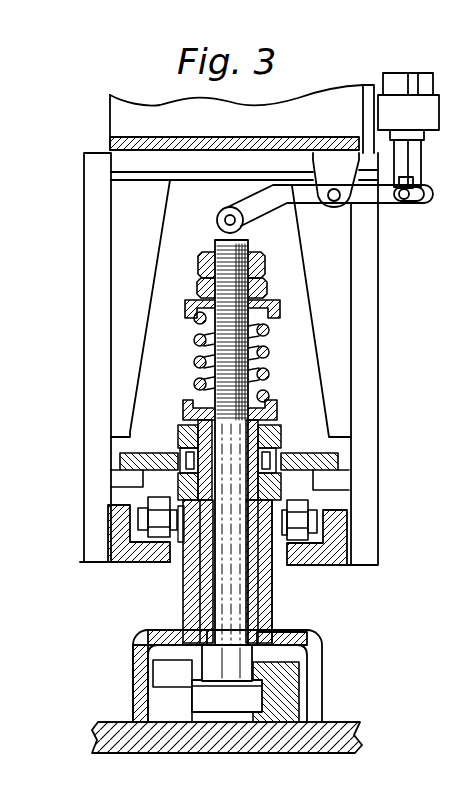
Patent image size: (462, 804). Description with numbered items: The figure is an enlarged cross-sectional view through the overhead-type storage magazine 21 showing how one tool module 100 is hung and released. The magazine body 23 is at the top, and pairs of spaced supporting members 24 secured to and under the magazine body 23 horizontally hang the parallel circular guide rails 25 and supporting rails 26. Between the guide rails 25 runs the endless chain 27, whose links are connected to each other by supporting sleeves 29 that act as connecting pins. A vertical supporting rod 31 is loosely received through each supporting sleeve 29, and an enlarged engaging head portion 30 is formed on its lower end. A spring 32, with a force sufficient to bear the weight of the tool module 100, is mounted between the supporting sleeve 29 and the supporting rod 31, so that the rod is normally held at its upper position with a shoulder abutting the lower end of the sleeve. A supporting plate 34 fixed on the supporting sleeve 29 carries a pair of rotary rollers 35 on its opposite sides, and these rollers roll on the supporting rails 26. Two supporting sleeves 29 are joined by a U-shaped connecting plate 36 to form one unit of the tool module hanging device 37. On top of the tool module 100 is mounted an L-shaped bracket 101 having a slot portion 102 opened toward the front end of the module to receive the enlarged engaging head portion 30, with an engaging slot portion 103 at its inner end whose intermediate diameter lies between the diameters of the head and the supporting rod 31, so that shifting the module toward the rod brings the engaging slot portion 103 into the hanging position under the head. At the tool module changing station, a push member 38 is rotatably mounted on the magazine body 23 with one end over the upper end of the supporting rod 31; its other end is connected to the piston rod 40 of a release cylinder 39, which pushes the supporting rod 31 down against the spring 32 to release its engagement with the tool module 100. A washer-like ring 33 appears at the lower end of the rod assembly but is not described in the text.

The storage magazine 21 is at (210, 331).
The magazine body 23 is at (110, 102).
The supporting members 24 is at (95, 332).
The guide rails 25 is at (338, 458).
The supporting rails 26 is at (127, 563).
The endless chain 27 is at (285, 434).
The supporting sleeve 29 is at (204, 571).
The enlarged engaging head portion 30 is at (212, 702).
The supporting rod 31 is at (233, 580).
The spring 32 is at (193, 364).
The washer ring 33 is at (248, 653).
The supporting plate 34 is at (180, 534).
The rotary rollers 35 is at (92, 522).
The U-shaped connecting plate 36 is at (135, 670).
The tool module hanging device 37 is at (279, 559).
The push member 38 is at (325, 200).
The release cylinder 39 is at (406, 88).
The piston rod 40 is at (424, 168).
The tool module 100 is at (340, 724).
The L-shaped bracket 101 is at (301, 673).
The slot portion 102 is at (158, 707).
The engaging slot portion 103 is at (250, 713).